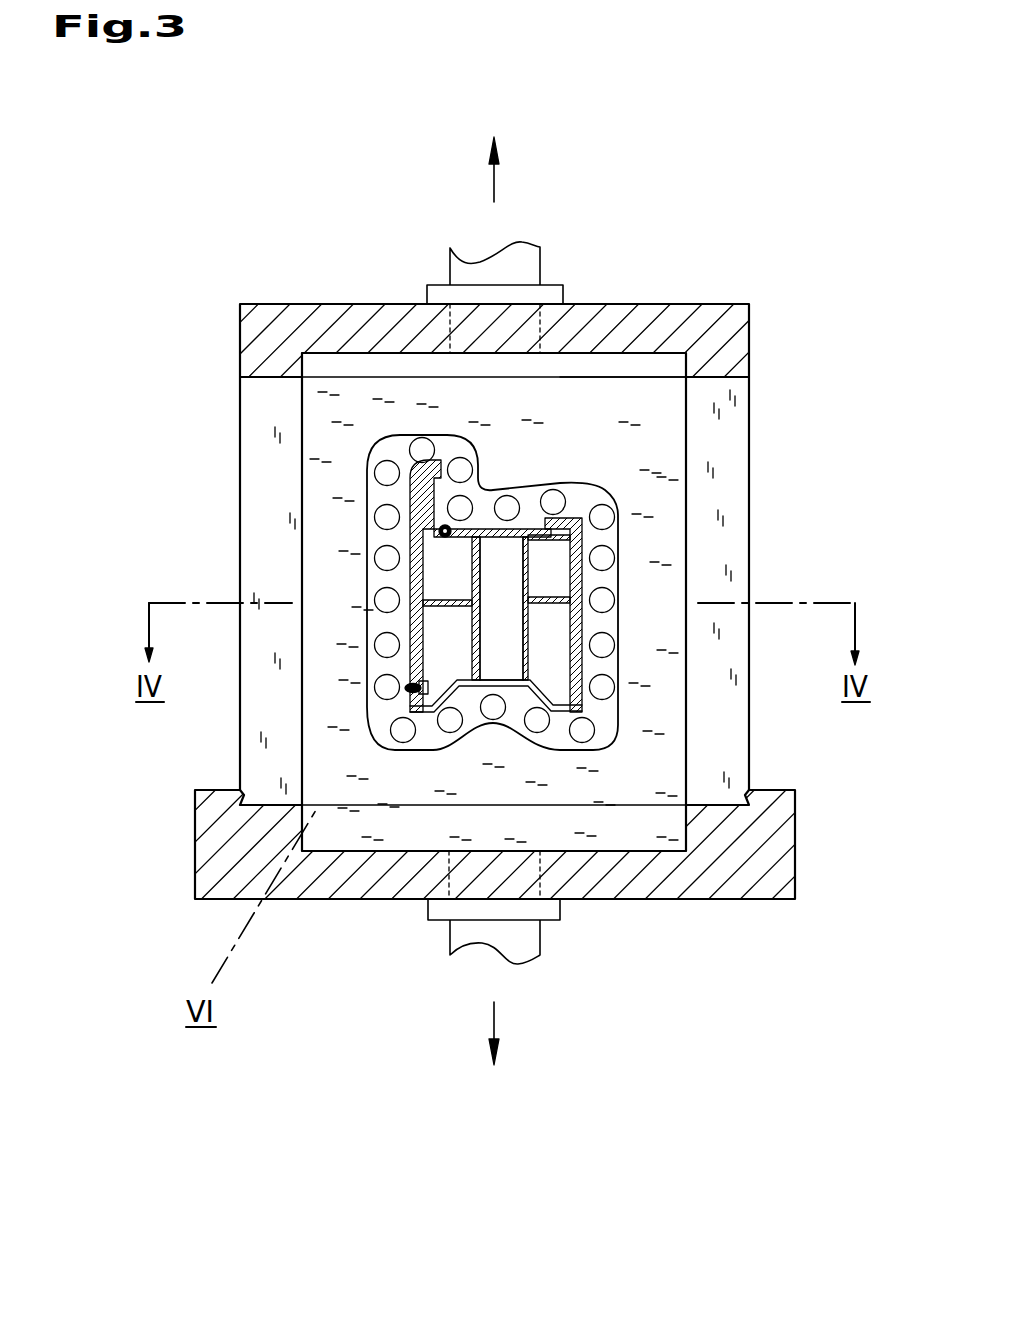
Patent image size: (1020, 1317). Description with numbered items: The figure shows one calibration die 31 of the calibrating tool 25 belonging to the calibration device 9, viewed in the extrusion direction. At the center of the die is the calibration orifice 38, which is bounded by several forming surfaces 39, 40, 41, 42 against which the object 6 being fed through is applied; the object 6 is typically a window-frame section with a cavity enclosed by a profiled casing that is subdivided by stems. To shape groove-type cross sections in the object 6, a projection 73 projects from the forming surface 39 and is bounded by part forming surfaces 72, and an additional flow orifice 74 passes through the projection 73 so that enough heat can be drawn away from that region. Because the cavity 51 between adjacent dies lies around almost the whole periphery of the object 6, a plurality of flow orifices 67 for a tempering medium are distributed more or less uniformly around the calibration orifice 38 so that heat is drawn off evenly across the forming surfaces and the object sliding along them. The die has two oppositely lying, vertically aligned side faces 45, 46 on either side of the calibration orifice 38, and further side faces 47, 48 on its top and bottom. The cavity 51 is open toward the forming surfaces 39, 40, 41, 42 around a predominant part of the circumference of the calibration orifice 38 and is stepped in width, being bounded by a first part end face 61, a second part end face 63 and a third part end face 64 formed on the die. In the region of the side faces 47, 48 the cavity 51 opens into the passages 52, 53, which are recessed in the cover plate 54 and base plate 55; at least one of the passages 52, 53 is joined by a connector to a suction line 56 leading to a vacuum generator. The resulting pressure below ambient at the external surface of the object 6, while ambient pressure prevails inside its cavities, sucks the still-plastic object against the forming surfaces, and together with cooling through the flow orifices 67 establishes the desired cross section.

The calibration device 9 is at (713, 200).
The calibrating tool 25 is at (778, 200).
The cover plate 54 is at (273, 337).
The passage 52 is at (364, 346).
The side face 47 is at (572, 376).
The base plate 55 is at (238, 874).
The side face 48 is at (343, 805).
The calibration orifice 38 is at (565, 846).
The suction line 56 is at (522, 263).
The side face 45 is at (234, 443).
The side face 46 is at (764, 508).
The calibration die 31 is at (732, 410).
The cavity 51 is at (672, 416).
The third part end face 64 is at (650, 472).
The flow orifice 67 is at (586, 486).
The additional flow orifice 74 is at (382, 462).
The second part end face 63 is at (603, 540).
The first part end face 61 is at (403, 545).
The forming surface 39 is at (420, 607).
The forming surface 40 is at (468, 515).
The forming surface 41 is at (580, 632).
The forming surface 42 is at (511, 686).
The part forming surface 72 is at (436, 674).
The projection 73 is at (448, 670).
The object 6 is at (501, 608).
The passage 53 is at (509, 670).